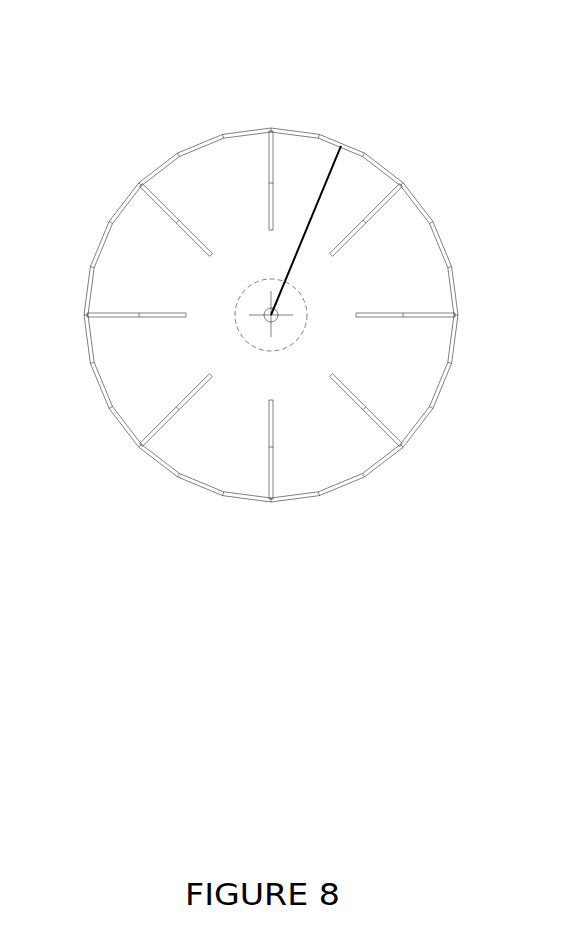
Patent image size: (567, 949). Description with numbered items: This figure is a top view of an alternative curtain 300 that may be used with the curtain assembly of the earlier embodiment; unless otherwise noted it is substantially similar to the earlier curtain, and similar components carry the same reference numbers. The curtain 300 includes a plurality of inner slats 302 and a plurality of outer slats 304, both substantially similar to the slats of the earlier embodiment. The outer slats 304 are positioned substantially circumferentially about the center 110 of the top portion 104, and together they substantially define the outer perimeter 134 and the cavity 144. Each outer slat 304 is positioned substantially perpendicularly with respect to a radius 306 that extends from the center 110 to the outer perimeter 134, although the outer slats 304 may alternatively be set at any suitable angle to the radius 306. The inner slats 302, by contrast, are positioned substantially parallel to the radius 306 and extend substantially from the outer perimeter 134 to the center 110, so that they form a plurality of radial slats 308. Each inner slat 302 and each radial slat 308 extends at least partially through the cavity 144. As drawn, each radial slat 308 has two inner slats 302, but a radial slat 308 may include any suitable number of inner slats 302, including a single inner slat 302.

The curtain 300 is at (299, 255).
The inner slat 302 is at (157, 197).
The outer slat 304 is at (199, 142).
The radius 306 is at (335, 160).
The radial slat 308 is at (178, 223).
The outer perimeter 134 is at (377, 172).
The top portion 104 is at (398, 256).
The center 110 is at (277, 322).
The cavity 144 is at (417, 392).